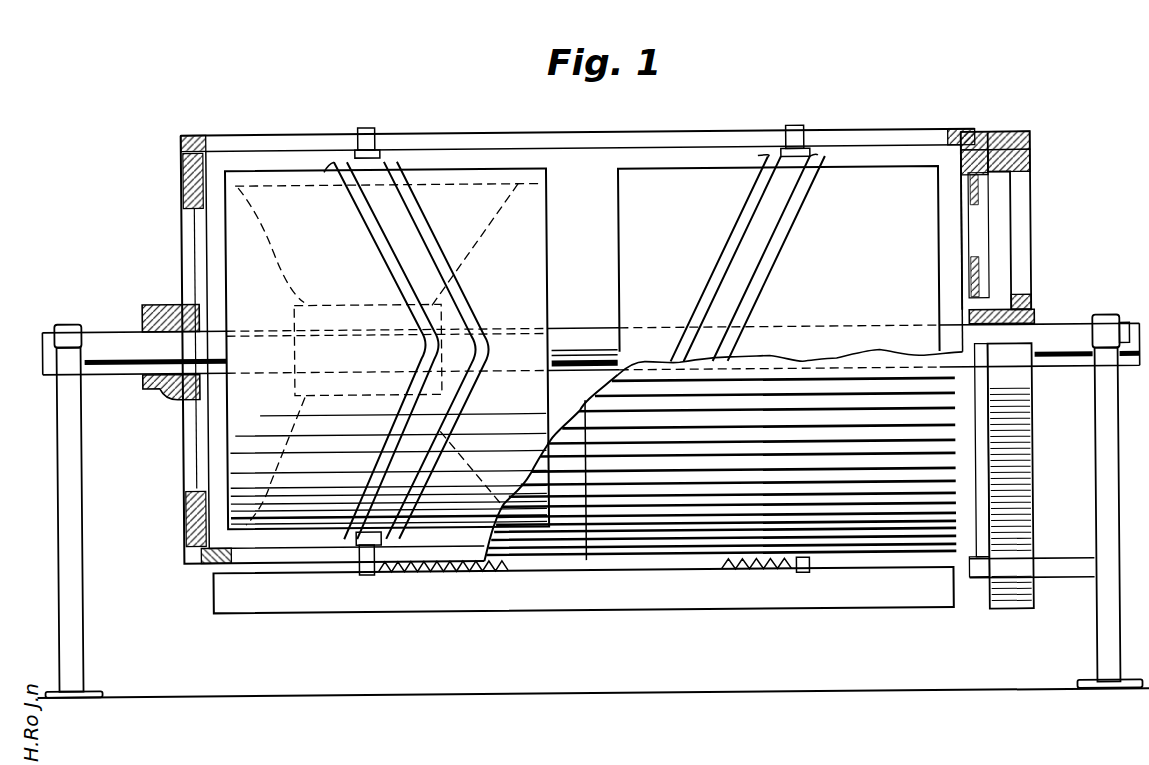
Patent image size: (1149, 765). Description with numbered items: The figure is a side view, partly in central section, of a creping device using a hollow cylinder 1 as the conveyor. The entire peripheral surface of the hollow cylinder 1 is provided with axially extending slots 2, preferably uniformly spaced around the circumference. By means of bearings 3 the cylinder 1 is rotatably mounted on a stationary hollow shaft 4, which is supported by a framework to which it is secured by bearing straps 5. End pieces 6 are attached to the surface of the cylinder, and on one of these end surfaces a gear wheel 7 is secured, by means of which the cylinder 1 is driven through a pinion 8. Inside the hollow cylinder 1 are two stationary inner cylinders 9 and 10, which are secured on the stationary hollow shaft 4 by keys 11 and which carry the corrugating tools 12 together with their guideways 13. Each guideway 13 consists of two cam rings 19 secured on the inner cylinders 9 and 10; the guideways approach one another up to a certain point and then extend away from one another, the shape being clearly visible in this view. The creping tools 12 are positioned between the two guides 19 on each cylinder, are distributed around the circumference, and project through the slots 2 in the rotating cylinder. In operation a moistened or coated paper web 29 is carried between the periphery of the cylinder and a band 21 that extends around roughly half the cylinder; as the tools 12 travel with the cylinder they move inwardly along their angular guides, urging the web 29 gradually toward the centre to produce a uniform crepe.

The hollow cylinder 1 is at (948, 140).
The slots 2 is at (248, 142).
The bearings 3 is at (143, 385).
The hollow shaft 4 is at (105, 340).
The bearing straps 5 is at (66, 325).
The end pieces 6 is at (192, 162).
The gear wheel 7 is at (1008, 136).
The pinion 8 is at (1007, 612).
The inner cylinder 9 is at (260, 452).
The inner cylinder 10 is at (651, 188).
The keys 11 is at (333, 326).
The corrugating tools 12 is at (369, 128).
The guideways 13 is at (405, 232).
The cam rings 19 is at (441, 425).
The band 21 is at (316, 575).
The paper web 29 is at (462, 576).